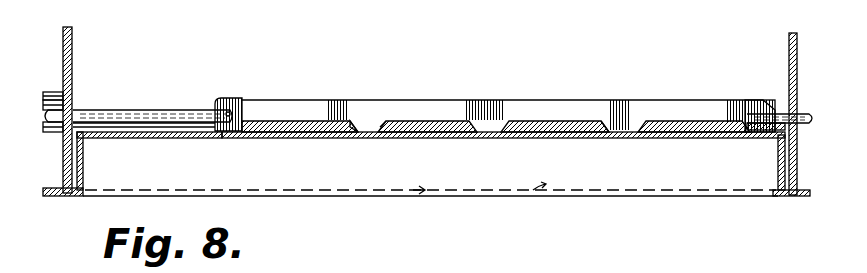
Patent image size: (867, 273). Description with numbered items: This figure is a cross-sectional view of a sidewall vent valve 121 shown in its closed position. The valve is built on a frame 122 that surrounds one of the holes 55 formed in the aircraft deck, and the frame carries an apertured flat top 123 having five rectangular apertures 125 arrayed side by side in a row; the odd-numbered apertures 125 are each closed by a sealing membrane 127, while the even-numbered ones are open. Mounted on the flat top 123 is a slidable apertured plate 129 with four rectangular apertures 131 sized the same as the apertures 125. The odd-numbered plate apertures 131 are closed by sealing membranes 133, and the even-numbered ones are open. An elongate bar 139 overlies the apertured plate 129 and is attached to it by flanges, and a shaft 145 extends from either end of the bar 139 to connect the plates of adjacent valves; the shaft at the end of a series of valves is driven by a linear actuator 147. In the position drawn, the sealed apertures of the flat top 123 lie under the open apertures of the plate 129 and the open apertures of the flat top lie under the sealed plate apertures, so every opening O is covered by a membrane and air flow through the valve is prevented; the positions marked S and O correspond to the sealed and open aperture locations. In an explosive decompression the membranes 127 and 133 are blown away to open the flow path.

The linear actuator 147 is at (50, 90).
The shaft 145 is at (86, 108).
The rectangular apertures 125 is at (138, 133).
The elongate bar 139 is at (233, 97).
The sealing membranes 133 is at (312, 118).
The apertured plate 129 is at (360, 127).
The flat top 123 is at (88, 140).
The sealing membrane 127 is at (213, 140).
The rectangular apertures 131 is at (390, 140).
The sidewall vent valve 121 is at (395, 183).
The holes 55 is at (415, 193).
The frame 122 is at (537, 193).
The slot S is at (283, 117).
The opening O is at (410, 120).